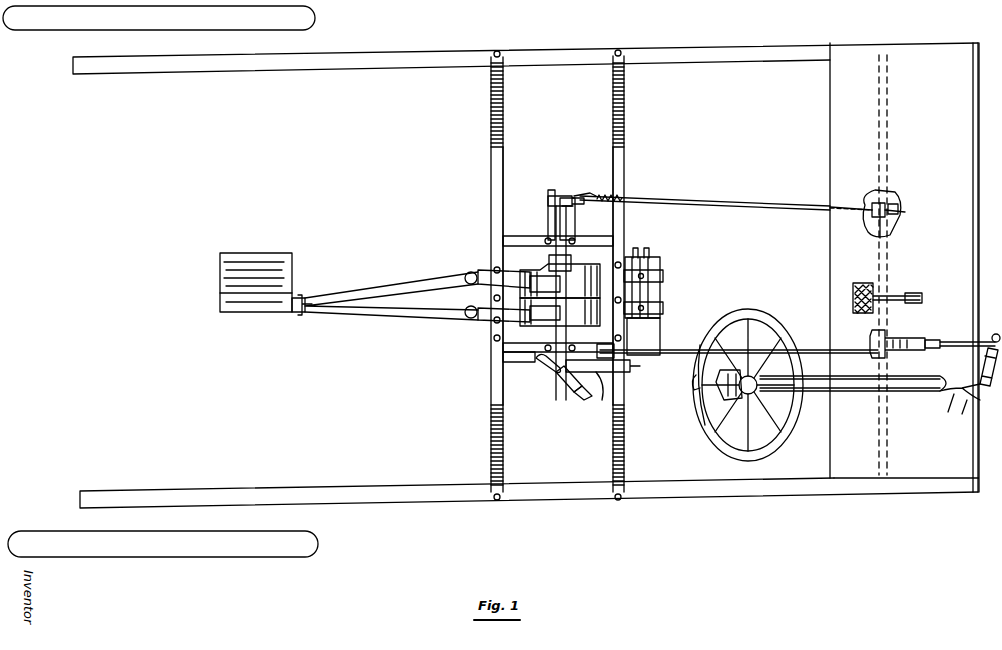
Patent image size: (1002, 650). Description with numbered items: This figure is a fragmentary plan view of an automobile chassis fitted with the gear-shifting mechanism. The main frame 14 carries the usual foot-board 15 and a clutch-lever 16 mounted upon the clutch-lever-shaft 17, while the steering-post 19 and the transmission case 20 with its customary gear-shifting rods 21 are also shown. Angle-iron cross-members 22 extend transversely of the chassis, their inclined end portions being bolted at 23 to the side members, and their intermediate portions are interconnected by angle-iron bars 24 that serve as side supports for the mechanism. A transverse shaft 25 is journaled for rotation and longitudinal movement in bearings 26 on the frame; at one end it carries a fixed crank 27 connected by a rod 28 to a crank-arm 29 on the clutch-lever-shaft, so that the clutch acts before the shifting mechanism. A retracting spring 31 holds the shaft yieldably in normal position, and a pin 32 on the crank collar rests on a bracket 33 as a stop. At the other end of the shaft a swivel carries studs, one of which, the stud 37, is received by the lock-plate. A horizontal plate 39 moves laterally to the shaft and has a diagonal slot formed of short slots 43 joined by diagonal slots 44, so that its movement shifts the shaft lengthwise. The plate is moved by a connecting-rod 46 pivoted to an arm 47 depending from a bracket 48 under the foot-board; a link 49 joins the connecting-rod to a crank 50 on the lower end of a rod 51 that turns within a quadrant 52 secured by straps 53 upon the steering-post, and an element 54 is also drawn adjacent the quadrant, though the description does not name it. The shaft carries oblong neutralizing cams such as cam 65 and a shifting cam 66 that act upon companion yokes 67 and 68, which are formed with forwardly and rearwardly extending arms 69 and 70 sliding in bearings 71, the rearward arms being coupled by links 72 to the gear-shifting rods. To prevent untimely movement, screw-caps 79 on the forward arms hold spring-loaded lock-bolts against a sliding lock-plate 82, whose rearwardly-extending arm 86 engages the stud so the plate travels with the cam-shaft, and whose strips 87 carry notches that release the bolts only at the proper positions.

The main frame 14 is at (372, 66).
The foot-board 15 is at (948, 267).
The clutch-lever 16 is at (853, 294).
The clutch-lever-shaft 17 is at (885, 228).
The steering-post 19 is at (840, 391).
The transmission case 20 is at (220, 288).
The gear-shifting rods 21 is at (300, 315).
The angle-iron cross-members 22 is at (612, 152).
The bolts 23 is at (494, 57).
The angle-iron bars 24 is at (504, 238).
The transverse shaft 25 is at (556, 332).
The bearings 26 is at (540, 246).
The fixed crank 27 is at (572, 188).
The rod 28 is at (750, 202).
The crank-arm 29 is at (893, 206).
The retracting spring 31 is at (620, 206).
The pin or stud 32 is at (548, 202).
The bracket 33 is at (560, 214).
The stud 37 is at (552, 366).
The horizontal plate 39 is at (536, 362).
The short slots 43 is at (568, 384).
The diagonal slot 44 is at (582, 394).
The connecting-rod 46 is at (692, 354).
The arm 47 is at (928, 340).
The bracket 48 is at (892, 338).
The link 49 is at (978, 340).
The crank 50 is at (986, 360).
The rod 51 is at (972, 392).
The quadrant 52 is at (728, 420).
The straps 53 is at (792, 418).
The ratchet 54 is at (692, 386).
The oblong cam 65 is at (572, 263).
The shifting cam 66 is at (485, 292).
The yoke 67 is at (524, 322).
The yoke 68 is at (546, 272).
The forwardly extending arms 69 is at (662, 304).
The rearwardly extending arms 70 is at (464, 272).
The bearings 71 is at (494, 268).
The links 72 is at (396, 282).
The screw-caps 79 is at (646, 274).
The sliding lock-plate 82 is at (643, 336).
The rearwardly-extending arm 86 is at (602, 400).
The strips 87 is at (648, 250).